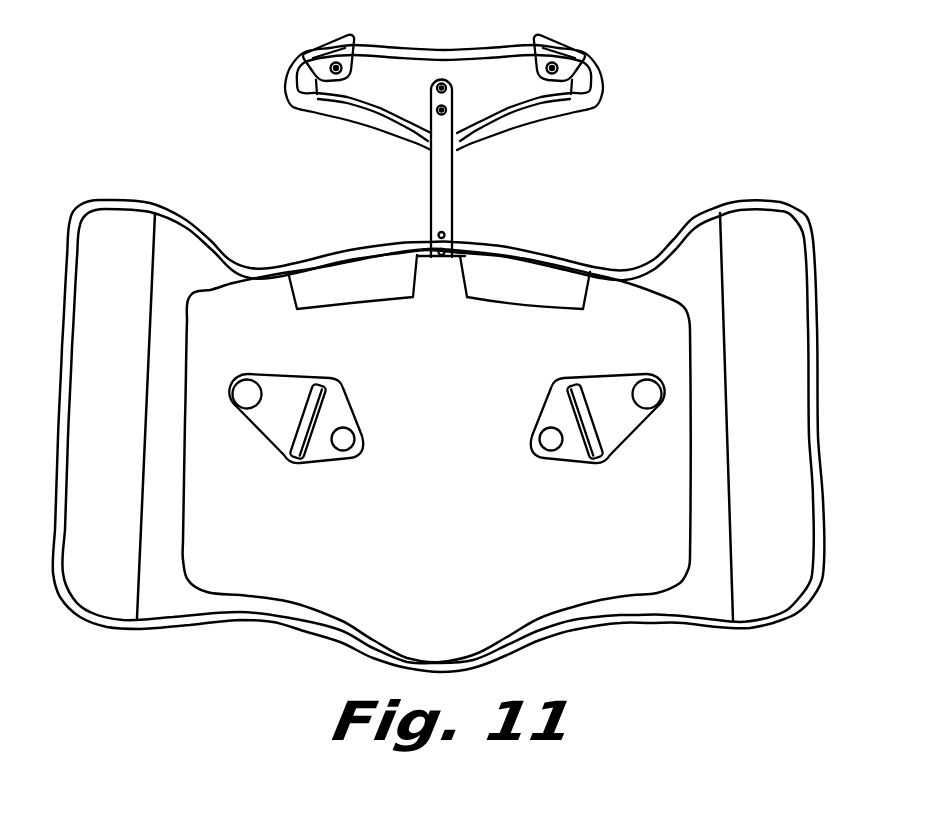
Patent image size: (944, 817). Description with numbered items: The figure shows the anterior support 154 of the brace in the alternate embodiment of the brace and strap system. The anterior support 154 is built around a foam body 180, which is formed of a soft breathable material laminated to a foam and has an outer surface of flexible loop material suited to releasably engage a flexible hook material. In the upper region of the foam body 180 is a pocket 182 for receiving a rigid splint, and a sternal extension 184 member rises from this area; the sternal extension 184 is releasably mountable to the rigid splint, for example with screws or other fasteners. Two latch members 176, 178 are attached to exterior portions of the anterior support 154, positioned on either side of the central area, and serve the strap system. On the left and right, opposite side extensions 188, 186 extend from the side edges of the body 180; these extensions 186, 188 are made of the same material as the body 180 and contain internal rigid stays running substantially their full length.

The anterior support 154 is at (312, 555).
The latch member 176 is at (376, 404).
The latch member 178 is at (611, 362).
The foam body 180 is at (691, 602).
The pocket 182 is at (238, 290).
The sternal extension member 184 is at (507, 164).
The side extension 186 is at (780, 488).
The side extension 188 is at (90, 567).